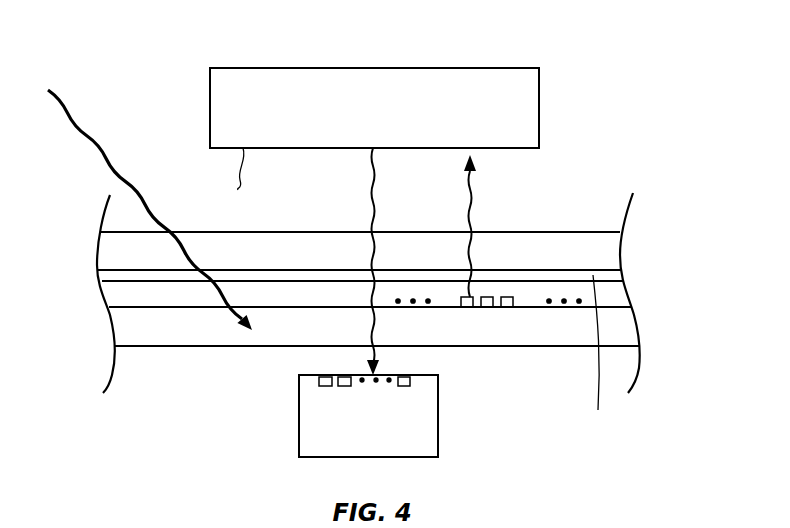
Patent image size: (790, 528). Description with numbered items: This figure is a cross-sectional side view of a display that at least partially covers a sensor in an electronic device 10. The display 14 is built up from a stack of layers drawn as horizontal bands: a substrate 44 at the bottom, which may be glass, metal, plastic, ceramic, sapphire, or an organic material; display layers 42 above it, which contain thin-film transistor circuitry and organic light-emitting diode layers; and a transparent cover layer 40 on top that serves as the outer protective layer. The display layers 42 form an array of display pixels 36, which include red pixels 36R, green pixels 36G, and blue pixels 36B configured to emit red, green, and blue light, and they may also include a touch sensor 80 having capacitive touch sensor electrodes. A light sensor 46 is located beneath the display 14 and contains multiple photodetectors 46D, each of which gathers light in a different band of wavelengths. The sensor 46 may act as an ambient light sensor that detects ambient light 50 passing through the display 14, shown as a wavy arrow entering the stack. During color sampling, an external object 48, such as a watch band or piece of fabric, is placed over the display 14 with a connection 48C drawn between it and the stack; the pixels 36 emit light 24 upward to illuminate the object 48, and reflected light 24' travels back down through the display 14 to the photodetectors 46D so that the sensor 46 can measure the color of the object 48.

The electronic device 10 is at (170, 147).
The display 14 is at (575, 216).
The light 24 is at (508, 226).
The reflected light 24' is at (333, 261).
The display pixels 36 is at (488, 341).
The red pixels 36R is at (467, 307).
The green pixels 36G is at (488, 307).
The blue pixels 36B is at (509, 307).
The cover layer 40 is at (607, 250).
The display layers 42 is at (640, 268).
The substrate 44 is at (622, 328).
The light sensor 46 is at (313, 411).
The photodetectors 46D is at (325, 386).
The external object 48 is at (526, 98).
The control circuitry connection 48C is at (239, 182).
The ambient light 50 is at (69, 110).
The touch sensor 80 is at (603, 356).